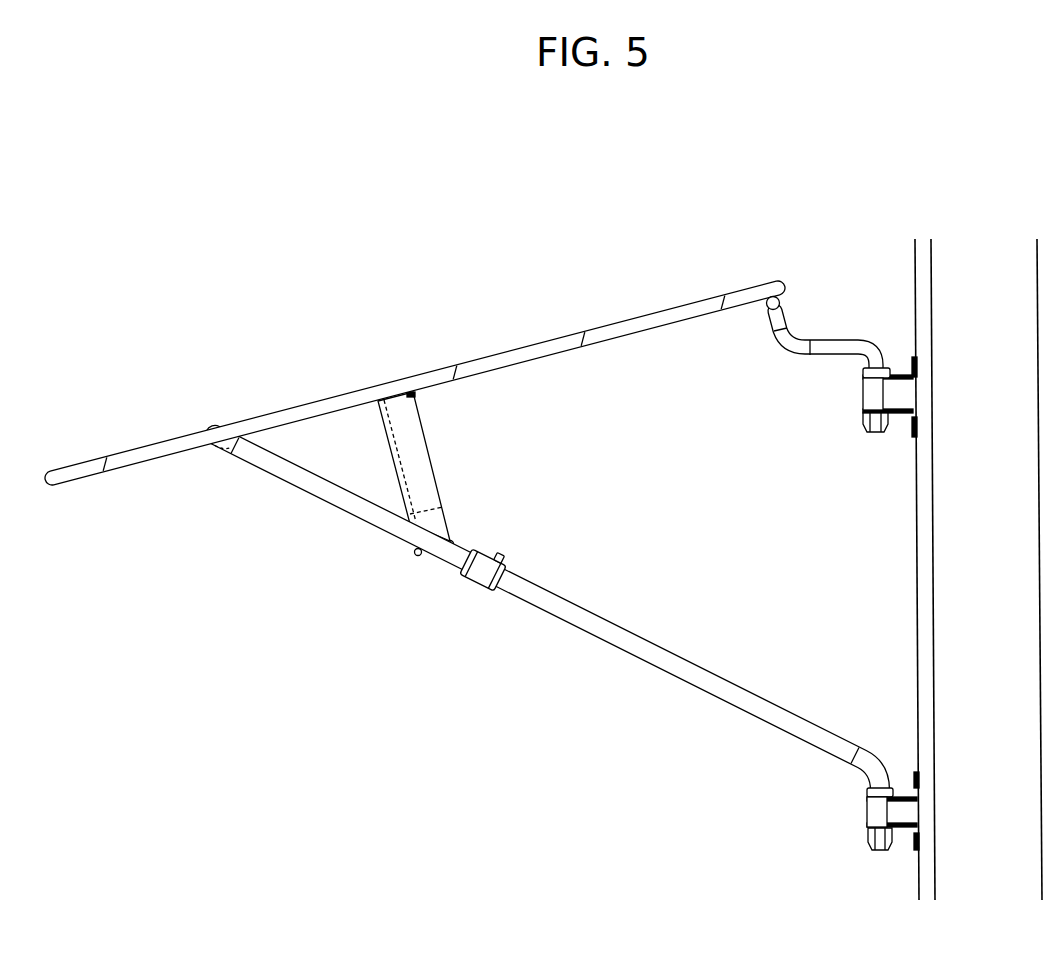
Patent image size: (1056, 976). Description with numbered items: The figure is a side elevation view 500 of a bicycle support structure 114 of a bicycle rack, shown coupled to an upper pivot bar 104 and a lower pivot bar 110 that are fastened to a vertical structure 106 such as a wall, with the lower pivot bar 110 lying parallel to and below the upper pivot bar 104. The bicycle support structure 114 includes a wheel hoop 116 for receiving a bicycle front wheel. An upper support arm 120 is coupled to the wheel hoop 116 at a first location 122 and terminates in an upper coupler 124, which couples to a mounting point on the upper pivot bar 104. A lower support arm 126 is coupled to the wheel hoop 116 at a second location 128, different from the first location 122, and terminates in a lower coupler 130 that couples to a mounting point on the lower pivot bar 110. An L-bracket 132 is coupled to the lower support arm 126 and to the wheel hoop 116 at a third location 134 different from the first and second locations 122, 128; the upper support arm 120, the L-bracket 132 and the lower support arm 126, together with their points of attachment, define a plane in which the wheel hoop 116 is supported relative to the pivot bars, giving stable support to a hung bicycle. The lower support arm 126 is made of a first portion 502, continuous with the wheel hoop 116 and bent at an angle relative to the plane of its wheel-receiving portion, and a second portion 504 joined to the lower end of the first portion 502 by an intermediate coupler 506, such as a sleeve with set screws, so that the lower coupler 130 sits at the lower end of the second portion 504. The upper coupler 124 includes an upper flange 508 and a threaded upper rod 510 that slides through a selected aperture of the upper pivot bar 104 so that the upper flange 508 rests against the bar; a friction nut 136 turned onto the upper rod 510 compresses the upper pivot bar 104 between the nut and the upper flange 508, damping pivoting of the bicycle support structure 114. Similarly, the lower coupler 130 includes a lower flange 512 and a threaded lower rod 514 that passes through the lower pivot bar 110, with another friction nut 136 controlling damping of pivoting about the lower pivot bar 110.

The side elevation view 500 is at (121, 151).
The upper pivot bar 104 is at (901, 417).
The vertical structure 106 is at (909, 601).
The lower pivot bar 110 is at (903, 795).
The bicycle support structure 114 is at (826, 280).
The wheel hoop 116 is at (456, 356).
The upper support arm 120 is at (832, 348).
The first location 122 is at (762, 312).
The upper coupler 124 is at (845, 380).
The lower support arm 126 is at (585, 640).
The second location 128 is at (212, 452).
The lower coupler 130 is at (840, 804).
The L-bracket 132 is at (428, 468).
The third location 134 is at (418, 398).
The friction nut 136 is at (866, 419).
The first portion 502 is at (222, 455).
The second portion 504 is at (890, 760).
The intermediate coupler 506 is at (470, 598).
The upper flange 508 is at (885, 366).
The upper rod 510 is at (862, 387).
The lower flange 512 is at (862, 780).
The lower rod 514 is at (878, 812).